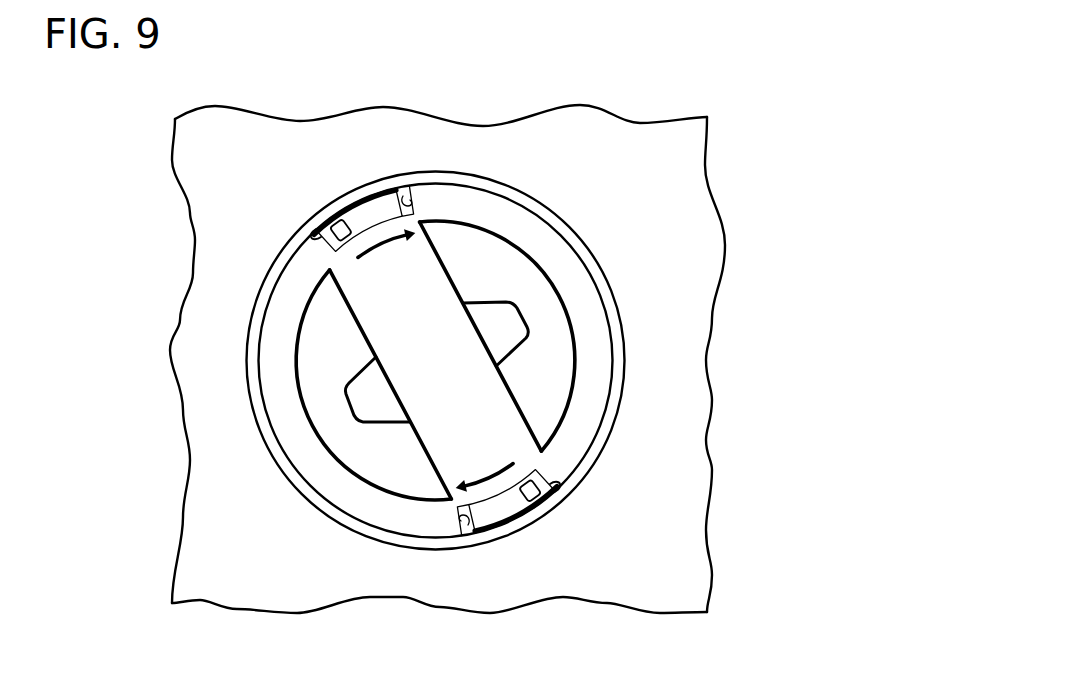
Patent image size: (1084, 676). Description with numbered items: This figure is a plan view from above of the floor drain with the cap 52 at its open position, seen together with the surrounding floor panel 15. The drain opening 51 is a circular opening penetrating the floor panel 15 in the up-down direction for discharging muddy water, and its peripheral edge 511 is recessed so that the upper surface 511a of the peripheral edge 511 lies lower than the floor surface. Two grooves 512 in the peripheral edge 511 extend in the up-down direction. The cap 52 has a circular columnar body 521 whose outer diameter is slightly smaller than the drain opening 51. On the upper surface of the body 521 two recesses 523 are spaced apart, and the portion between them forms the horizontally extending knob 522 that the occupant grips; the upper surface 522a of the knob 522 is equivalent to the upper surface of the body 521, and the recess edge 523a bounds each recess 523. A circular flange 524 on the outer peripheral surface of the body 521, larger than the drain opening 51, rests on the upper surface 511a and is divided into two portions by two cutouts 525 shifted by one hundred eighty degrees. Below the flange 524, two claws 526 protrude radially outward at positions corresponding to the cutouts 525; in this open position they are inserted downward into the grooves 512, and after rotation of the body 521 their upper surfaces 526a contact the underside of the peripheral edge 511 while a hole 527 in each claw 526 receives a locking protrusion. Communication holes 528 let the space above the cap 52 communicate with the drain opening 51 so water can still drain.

The floor panel 15 is at (192, 277).
The drain opening 51 is at (307, 230).
The cap 52 is at (630, 350).
The peripheral edge 511 is at (497, 186).
The upper surface of the peripheral edge 511a is at (411, 543).
The grooves 512 is at (373, 212).
The body 521 is at (387, 227).
The knob 522 is at (425, 300).
The upper surface of the knob 522a is at (440, 425).
The recesses 523 is at (510, 247).
The opening edge 523a is at (325, 343).
The flange 524 is at (360, 504).
The cutouts 525 is at (398, 183).
The claws 526 is at (338, 220).
The upper surfaces of the claws 526a is at (500, 510).
The hole 527 is at (322, 226).
The communication holes 528 is at (492, 303).